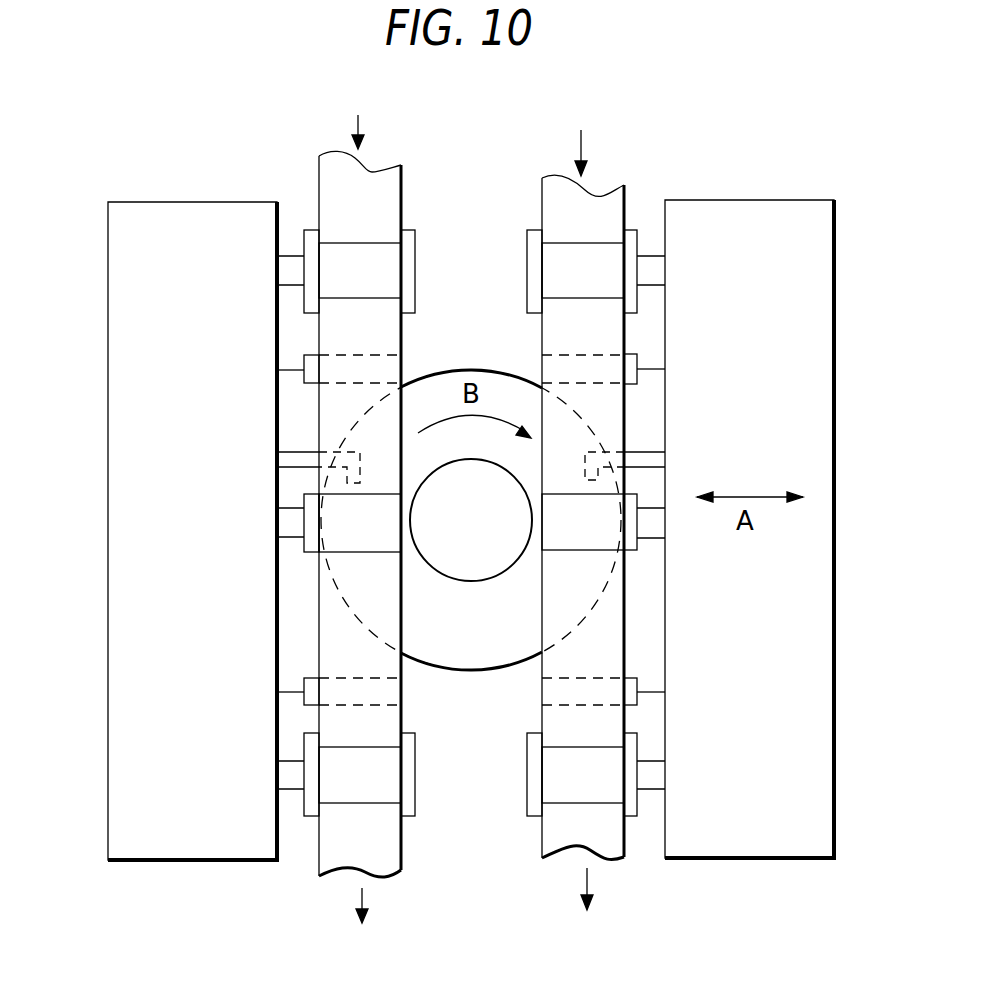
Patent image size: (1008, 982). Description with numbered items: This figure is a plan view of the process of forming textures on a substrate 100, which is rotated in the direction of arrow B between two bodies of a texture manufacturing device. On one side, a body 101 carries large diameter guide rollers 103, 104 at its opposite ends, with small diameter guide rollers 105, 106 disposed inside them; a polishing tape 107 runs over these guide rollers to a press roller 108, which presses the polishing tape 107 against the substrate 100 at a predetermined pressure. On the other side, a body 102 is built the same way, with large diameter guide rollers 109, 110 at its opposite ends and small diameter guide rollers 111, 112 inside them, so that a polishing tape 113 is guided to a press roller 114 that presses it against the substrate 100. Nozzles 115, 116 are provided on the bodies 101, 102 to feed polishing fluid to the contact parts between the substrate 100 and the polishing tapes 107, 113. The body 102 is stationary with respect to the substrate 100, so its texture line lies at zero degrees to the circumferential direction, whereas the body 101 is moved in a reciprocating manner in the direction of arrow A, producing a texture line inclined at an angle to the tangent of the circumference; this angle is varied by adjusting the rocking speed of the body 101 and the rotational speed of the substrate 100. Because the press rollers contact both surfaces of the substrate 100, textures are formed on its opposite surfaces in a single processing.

The substrate 100 is at (483, 655).
The body 101 is at (738, 212).
The body 102 is at (203, 215).
The large diameter guide roller 103 is at (630, 237).
The large diameter guide roller 104 is at (636, 815).
The small diameter guide roller 105 is at (632, 362).
The small diameter guide roller 106 is at (637, 690).
The polishing tape 107 is at (570, 840).
The press roller 108 is at (630, 503).
The large diameter guide roller 109 is at (403, 237).
The large diameter guide roller 110 is at (413, 813).
The small diameter guide roller 111 is at (395, 367).
The small diameter guide roller 112 is at (398, 690).
The polishing tape 113 is at (328, 852).
The press roller 114 is at (305, 545).
The nozzle 115 is at (658, 458).
The nozzle 116 is at (277, 457).